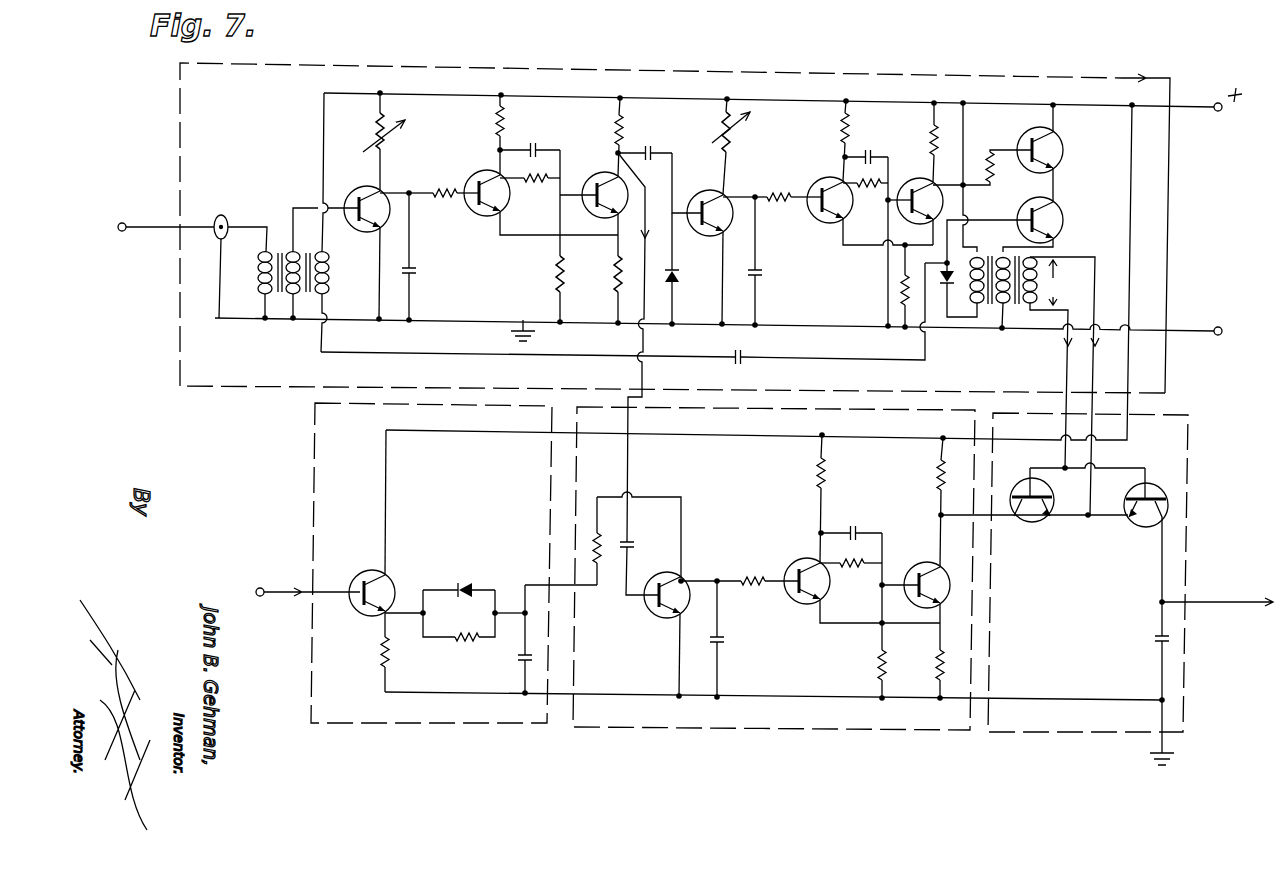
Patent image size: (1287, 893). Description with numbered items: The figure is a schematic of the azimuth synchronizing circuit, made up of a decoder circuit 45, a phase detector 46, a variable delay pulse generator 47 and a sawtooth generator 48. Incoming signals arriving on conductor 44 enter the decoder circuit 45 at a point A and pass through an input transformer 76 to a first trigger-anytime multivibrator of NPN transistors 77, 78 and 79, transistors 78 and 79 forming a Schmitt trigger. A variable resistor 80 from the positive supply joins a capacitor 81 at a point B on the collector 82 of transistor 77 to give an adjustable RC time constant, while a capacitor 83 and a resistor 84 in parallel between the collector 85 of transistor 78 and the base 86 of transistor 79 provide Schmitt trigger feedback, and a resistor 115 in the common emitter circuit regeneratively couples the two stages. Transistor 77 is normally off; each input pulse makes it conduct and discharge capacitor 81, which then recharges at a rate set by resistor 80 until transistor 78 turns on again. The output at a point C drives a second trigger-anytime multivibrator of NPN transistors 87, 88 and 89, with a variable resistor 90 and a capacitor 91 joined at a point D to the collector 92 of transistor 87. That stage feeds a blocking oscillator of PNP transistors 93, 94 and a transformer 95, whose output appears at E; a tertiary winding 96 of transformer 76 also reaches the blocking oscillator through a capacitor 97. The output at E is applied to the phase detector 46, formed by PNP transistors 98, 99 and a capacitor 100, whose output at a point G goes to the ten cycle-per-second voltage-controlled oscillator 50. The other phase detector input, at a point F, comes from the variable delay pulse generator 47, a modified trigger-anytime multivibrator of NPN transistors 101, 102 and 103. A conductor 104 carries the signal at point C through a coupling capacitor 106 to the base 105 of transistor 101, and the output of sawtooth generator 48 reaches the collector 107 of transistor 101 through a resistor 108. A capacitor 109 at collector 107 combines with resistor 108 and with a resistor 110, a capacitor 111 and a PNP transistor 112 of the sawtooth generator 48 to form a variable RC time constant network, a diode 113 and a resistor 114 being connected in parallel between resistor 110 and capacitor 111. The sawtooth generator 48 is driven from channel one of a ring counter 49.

The input conductor from FIG. 6 44 is at (106, 228).
The decoder circuit 45 is at (615, 66).
The phase detector 46 is at (1011, 733).
The variable delay pulse generator 47 is at (603, 730).
The sawtooth generator 48 is at (386, 728).
The ring counter 49 is at (262, 588).
The voltage-controlled oscillator 50 is at (1217, 579).
The transformer 76 is at (266, 296).
The transistor 77 is at (388, 231).
The transistor 78 is at (481, 216).
The transistor 79 is at (607, 218).
The variable resistor 80 is at (394, 127).
The capacitor 81 is at (416, 275).
The collector 82 is at (366, 188).
The capacitor 83 is at (536, 143).
The resistor 84 is at (532, 186).
The collector 85 is at (484, 172).
The base 86 is at (596, 206).
The transistor 87 is at (713, 234).
The transistor 88 is at (816, 223).
The transistor 89 is at (925, 178).
The variable resistor 90 is at (746, 128).
The capacitor 91 is at (762, 278).
The collector 92 is at (712, 181).
The transistor 93 is at (1068, 155).
The transistor 94 is at (1068, 222).
The transformer 95 is at (1008, 306).
The tertiary winding 96 is at (294, 296).
The capacitor 97 is at (746, 362).
The transistor 98 is at (1024, 523).
The transistor 99 is at (1143, 528).
The capacitor 100 is at (1153, 642).
The transistor 101 is at (664, 622).
The transistor 102 is at (792, 560).
The transistor 103 is at (916, 562).
The conductor 104 is at (648, 362).
The base 105 is at (653, 620).
The coupling capacitor 106 is at (629, 546).
The collector 107 is at (673, 575).
The resistor 108 is at (600, 562).
The capacitor 109 is at (722, 646).
The resistor 110 is at (380, 655).
The capacitor 111 is at (517, 664).
The transistor 112 is at (393, 582).
The diode 113 is at (466, 582).
The resistor 114 is at (462, 641).
The resistor 115 is at (616, 274).
The point A is at (120, 232).
The point B is at (411, 191).
The point C is at (616, 152).
The point D is at (756, 195).
The point E is at (1052, 282).
The point F is at (938, 513).
The point G is at (1160, 602).